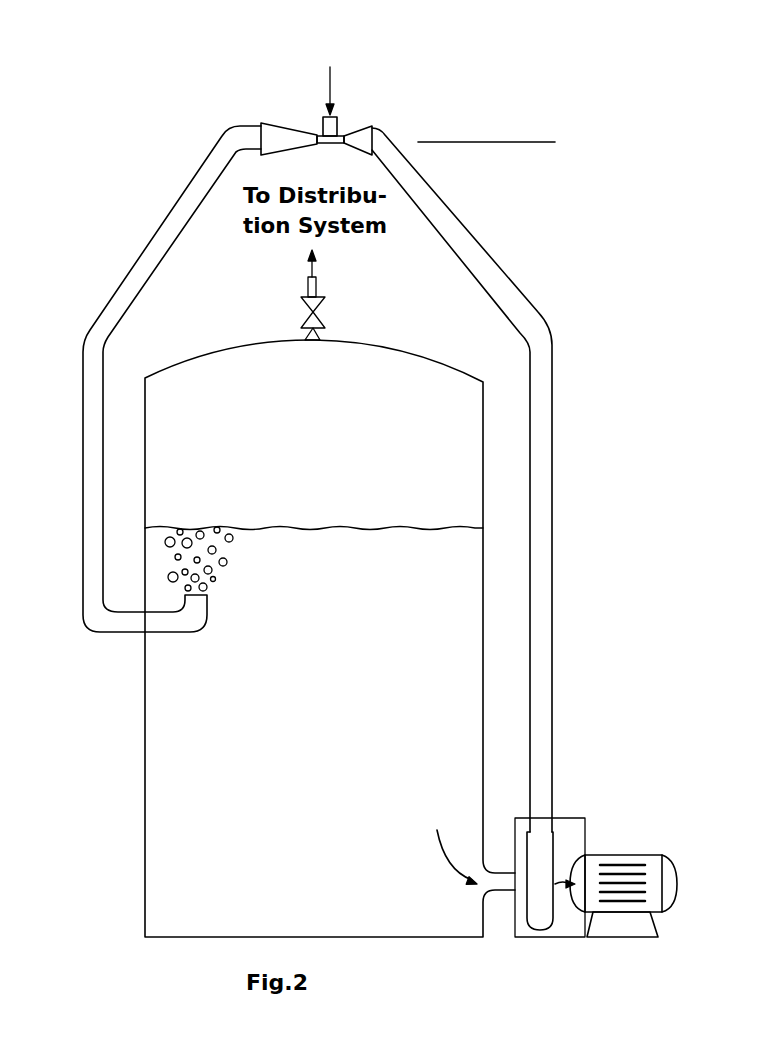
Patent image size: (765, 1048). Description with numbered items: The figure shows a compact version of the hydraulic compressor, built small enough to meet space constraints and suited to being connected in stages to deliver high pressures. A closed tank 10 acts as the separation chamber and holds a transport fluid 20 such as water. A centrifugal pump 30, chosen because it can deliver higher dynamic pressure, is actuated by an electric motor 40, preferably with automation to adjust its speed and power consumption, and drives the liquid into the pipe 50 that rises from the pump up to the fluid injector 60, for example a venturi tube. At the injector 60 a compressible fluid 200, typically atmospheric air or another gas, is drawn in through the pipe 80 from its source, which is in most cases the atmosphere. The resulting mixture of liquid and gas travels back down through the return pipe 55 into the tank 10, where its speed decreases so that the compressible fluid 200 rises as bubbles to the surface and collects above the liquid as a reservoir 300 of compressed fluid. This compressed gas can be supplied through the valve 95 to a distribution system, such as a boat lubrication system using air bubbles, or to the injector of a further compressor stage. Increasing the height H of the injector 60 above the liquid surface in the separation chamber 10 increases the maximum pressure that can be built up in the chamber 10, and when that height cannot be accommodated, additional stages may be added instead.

The tank 10 is at (142, 923).
The transport fluid 20 is at (363, 547).
The pump 30 is at (538, 920).
The motor 40 is at (618, 845).
The pipe 50 is at (549, 320).
The return pipe to tank 55 is at (138, 245).
The fluid injector 60 is at (318, 109).
The pipe 80 is at (343, 123).
The valve 95 is at (323, 310).
The compressible fluid 200 is at (231, 534).
The reservoir 300 is at (302, 423).
The height H is at (499, 143).